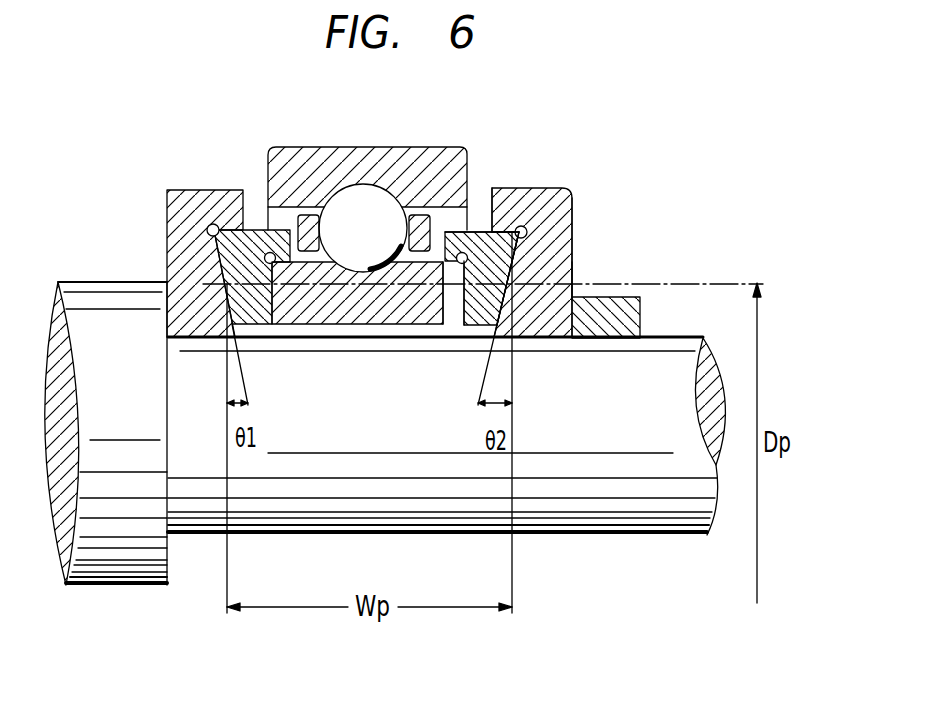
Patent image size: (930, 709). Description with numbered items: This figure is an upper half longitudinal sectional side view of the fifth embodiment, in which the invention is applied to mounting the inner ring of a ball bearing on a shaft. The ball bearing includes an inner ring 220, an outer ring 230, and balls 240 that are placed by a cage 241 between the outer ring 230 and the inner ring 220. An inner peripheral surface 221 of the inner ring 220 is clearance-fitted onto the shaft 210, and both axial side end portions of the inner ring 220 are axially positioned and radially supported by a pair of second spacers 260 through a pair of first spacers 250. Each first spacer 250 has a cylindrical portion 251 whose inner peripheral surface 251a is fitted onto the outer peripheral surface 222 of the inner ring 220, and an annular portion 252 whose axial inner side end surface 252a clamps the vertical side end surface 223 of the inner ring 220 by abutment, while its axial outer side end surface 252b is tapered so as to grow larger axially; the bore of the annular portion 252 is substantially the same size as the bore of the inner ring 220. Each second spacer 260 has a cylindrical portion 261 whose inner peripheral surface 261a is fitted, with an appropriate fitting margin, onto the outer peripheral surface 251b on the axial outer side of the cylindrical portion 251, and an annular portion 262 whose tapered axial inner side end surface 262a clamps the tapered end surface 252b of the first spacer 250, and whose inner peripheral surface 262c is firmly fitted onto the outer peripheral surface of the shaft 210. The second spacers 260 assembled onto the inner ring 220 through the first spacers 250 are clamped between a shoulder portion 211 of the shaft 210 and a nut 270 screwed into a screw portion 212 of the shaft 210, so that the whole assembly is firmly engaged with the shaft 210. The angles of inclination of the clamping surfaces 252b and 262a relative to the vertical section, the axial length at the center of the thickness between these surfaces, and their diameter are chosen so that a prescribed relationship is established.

The shaft 210 is at (606, 508).
The shoulder portion 211 is at (105, 293).
The screw portion 212 is at (693, 340).
The inner ring 220 is at (288, 308).
The inner peripheral surface 221 is at (320, 300).
The outer peripheral surface 222 is at (428, 187).
The vertical side end surface 223 is at (469, 318).
The outer ring 230 is at (332, 167).
The balls 240 is at (368, 205).
The cage 241 is at (304, 240).
The first spacer 250 is at (214, 225).
The cylindrical portion 251 is at (482, 234).
The inner peripheral surface 251a is at (424, 305).
The outer peripheral surface 251b is at (516, 228).
The annular portion 252 is at (603, 318).
The axial inner side end surface 252a is at (440, 308).
The axial outer side end surface 252b is at (532, 338).
The second spacer 260 is at (178, 207).
The cylindrical portion 261 is at (538, 192).
The inner peripheral surface 261a is at (573, 235).
The annular portion 262 is at (507, 300).
The tapered axial inner side end surface 262a is at (574, 238).
The inner peripheral surface 262c is at (541, 340).
The nut 270 is at (642, 310).